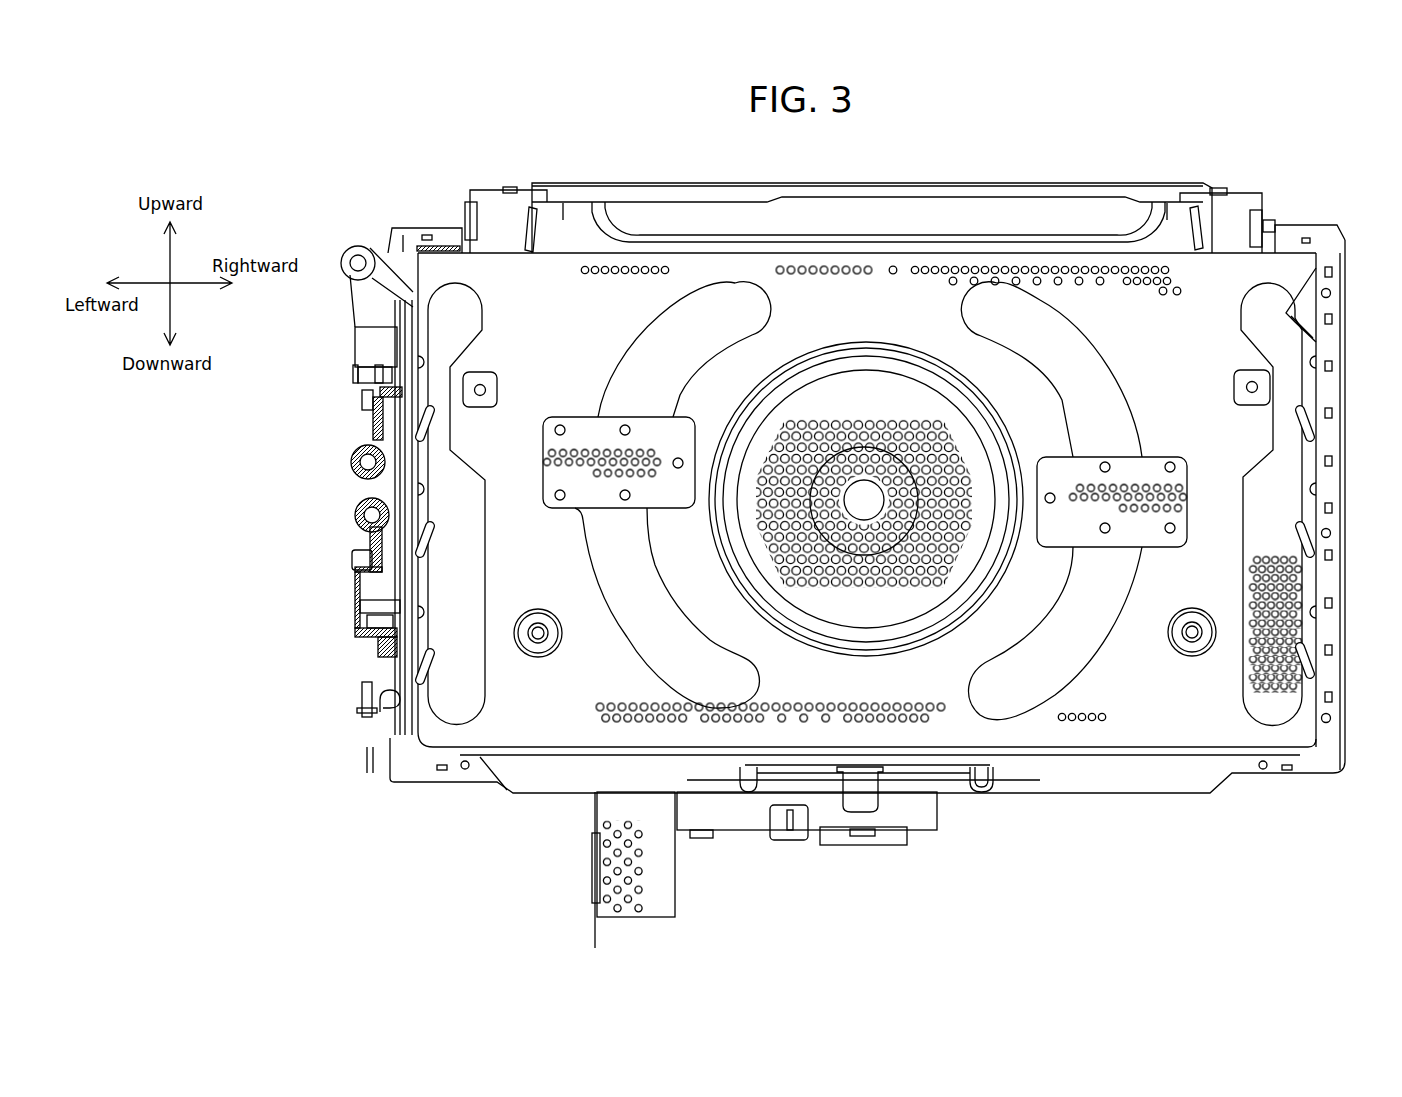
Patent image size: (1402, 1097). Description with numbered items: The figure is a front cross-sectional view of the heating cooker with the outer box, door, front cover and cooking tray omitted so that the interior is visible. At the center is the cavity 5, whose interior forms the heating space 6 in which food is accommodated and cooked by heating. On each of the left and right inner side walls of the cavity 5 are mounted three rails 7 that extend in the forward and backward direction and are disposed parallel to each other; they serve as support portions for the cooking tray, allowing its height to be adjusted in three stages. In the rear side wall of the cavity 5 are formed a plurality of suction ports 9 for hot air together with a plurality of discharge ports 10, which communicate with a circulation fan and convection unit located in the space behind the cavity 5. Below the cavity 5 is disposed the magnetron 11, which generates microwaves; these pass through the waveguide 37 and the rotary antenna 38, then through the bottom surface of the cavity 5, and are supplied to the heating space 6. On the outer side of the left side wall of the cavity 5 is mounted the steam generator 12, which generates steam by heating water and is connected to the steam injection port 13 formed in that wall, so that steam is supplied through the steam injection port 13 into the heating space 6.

The cavity 5 is at (1320, 190).
The heating space 6 is at (1162, 720).
The rails 7 is at (1306, 662).
The suction ports 9 is at (895, 427).
The discharge ports 10 is at (1140, 262).
The magnetron 11 is at (660, 880).
The steam generator 12 is at (333, 540).
The steam injection port 13 is at (413, 293).
The waveguide 37 is at (922, 815).
The rotary antenna 38 is at (985, 795).